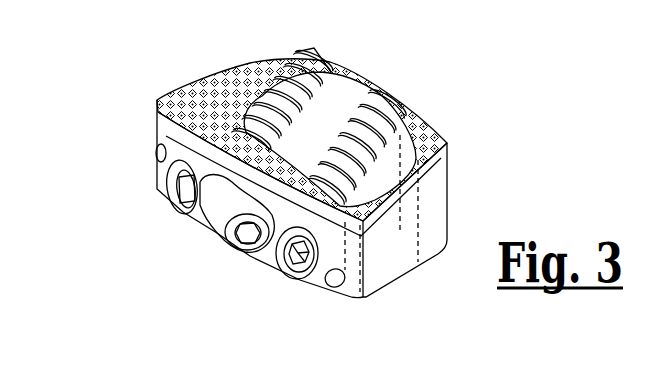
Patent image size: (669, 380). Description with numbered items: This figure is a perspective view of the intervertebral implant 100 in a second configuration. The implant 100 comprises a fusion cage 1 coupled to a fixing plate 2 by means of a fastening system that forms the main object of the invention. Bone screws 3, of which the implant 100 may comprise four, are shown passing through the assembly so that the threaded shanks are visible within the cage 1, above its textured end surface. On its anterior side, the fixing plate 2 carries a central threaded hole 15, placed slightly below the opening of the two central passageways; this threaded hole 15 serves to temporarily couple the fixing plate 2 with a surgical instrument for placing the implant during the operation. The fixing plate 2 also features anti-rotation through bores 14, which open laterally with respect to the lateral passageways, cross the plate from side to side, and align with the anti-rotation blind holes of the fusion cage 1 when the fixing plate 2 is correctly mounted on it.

The intervertebral implant 100 is at (372, 71).
The fusion cage 1 is at (427, 177).
The fixing plate 2 is at (178, 126).
The bone screws 3 is at (278, 112).
The anti-rotation through bores 14 is at (155, 152).
The central threaded hole 15 is at (237, 235).